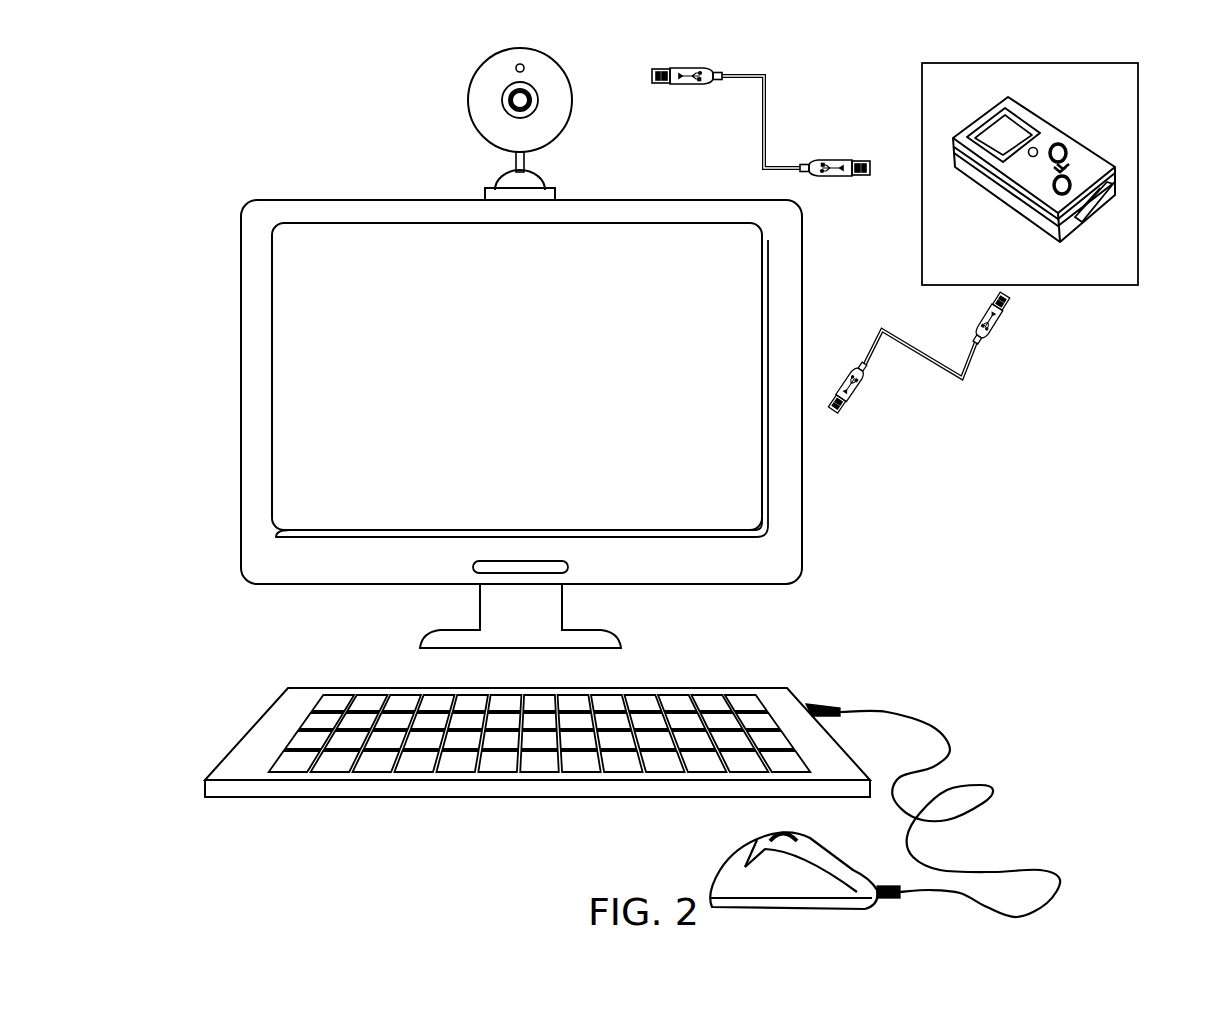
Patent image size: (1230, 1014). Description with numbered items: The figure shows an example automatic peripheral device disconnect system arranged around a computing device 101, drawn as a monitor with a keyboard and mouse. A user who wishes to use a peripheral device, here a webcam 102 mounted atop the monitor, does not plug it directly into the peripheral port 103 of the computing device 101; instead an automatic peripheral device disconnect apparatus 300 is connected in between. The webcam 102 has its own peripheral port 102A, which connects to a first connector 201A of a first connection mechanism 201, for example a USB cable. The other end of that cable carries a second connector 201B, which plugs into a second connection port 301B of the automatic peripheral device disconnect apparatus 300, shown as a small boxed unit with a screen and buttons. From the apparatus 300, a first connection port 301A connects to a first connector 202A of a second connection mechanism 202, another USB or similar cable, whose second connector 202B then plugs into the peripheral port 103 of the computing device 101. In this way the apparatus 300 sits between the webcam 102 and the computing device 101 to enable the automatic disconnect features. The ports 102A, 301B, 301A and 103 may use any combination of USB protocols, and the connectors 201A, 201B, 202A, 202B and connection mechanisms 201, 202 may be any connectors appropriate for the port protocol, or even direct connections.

The computing device 101 is at (241, 322).
The webcam 102 is at (468, 103).
The peripheral port 102A is at (545, 180).
The peripheral port 103 is at (803, 478).
The first connection mechanism 201 is at (767, 148).
The first connector 201A is at (652, 68).
The second connector 201B is at (835, 178).
The second connection mechanism 202 is at (965, 378).
The first connector 202A is at (1000, 330).
The second connector 202B is at (848, 410).
The automatic peripheral device disconnect apparatus 300 is at (1105, 108).
The first connection port 301A is at (1110, 196).
The second connection port 301B is at (998, 100).